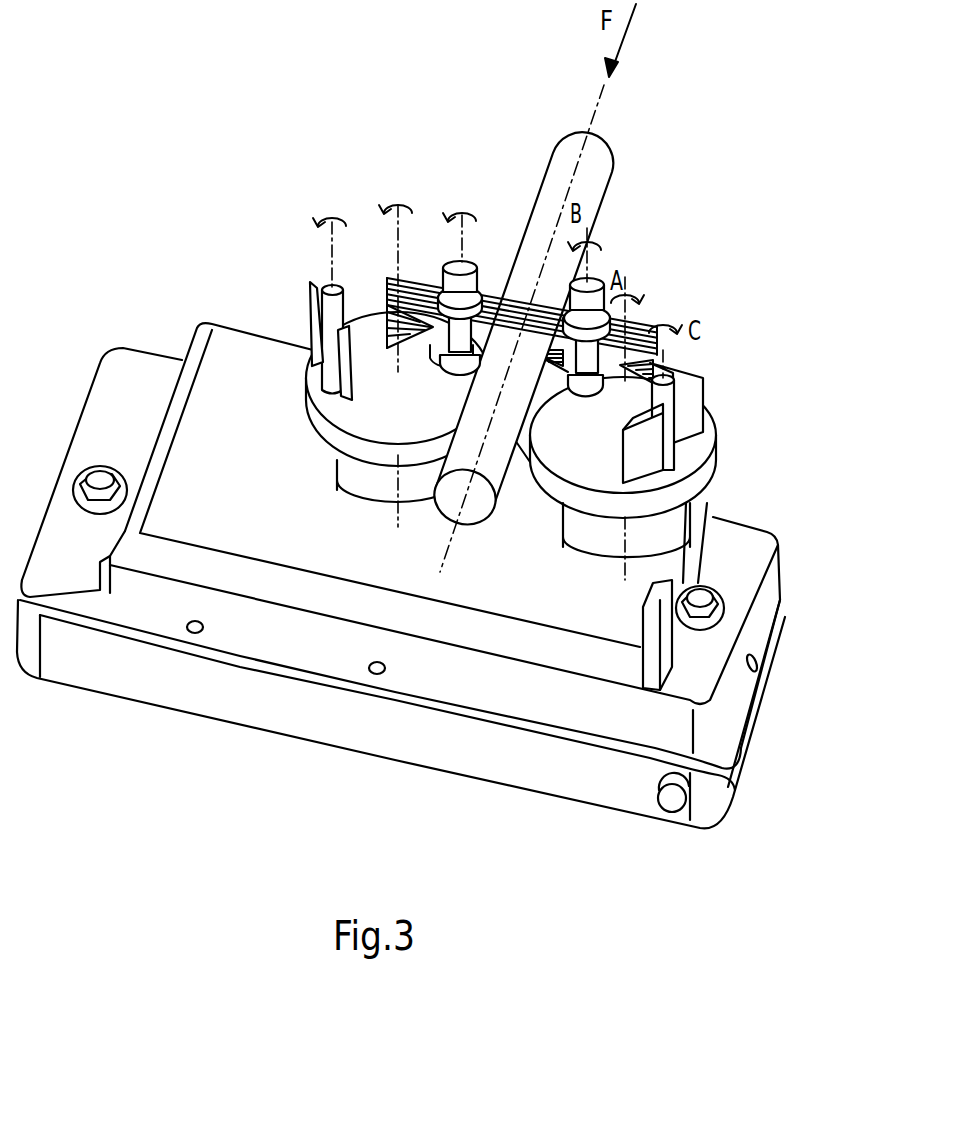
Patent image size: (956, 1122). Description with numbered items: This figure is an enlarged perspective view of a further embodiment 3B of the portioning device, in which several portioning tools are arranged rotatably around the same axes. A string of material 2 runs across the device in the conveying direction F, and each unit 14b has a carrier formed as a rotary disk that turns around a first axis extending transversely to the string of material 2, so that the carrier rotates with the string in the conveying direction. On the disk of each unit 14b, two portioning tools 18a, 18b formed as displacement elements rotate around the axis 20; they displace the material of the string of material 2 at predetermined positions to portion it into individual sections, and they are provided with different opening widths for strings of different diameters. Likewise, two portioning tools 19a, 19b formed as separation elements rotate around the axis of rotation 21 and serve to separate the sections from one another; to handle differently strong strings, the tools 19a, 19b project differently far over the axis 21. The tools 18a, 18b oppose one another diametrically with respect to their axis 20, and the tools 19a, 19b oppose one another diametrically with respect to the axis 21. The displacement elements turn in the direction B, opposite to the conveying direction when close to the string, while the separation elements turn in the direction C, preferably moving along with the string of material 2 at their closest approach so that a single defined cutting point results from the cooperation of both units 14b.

The string of material 2 is at (563, 163).
The embodiment 3B is at (758, 346).
The unit 14b is at (464, 184).
The portioning tool 18a is at (545, 475).
The portioning tool 18b is at (640, 335).
The portioning tool 19a is at (710, 399).
The portioning tool 19b is at (713, 467).
The axis 20 is at (592, 229).
The axis of rotation 21 is at (660, 322).